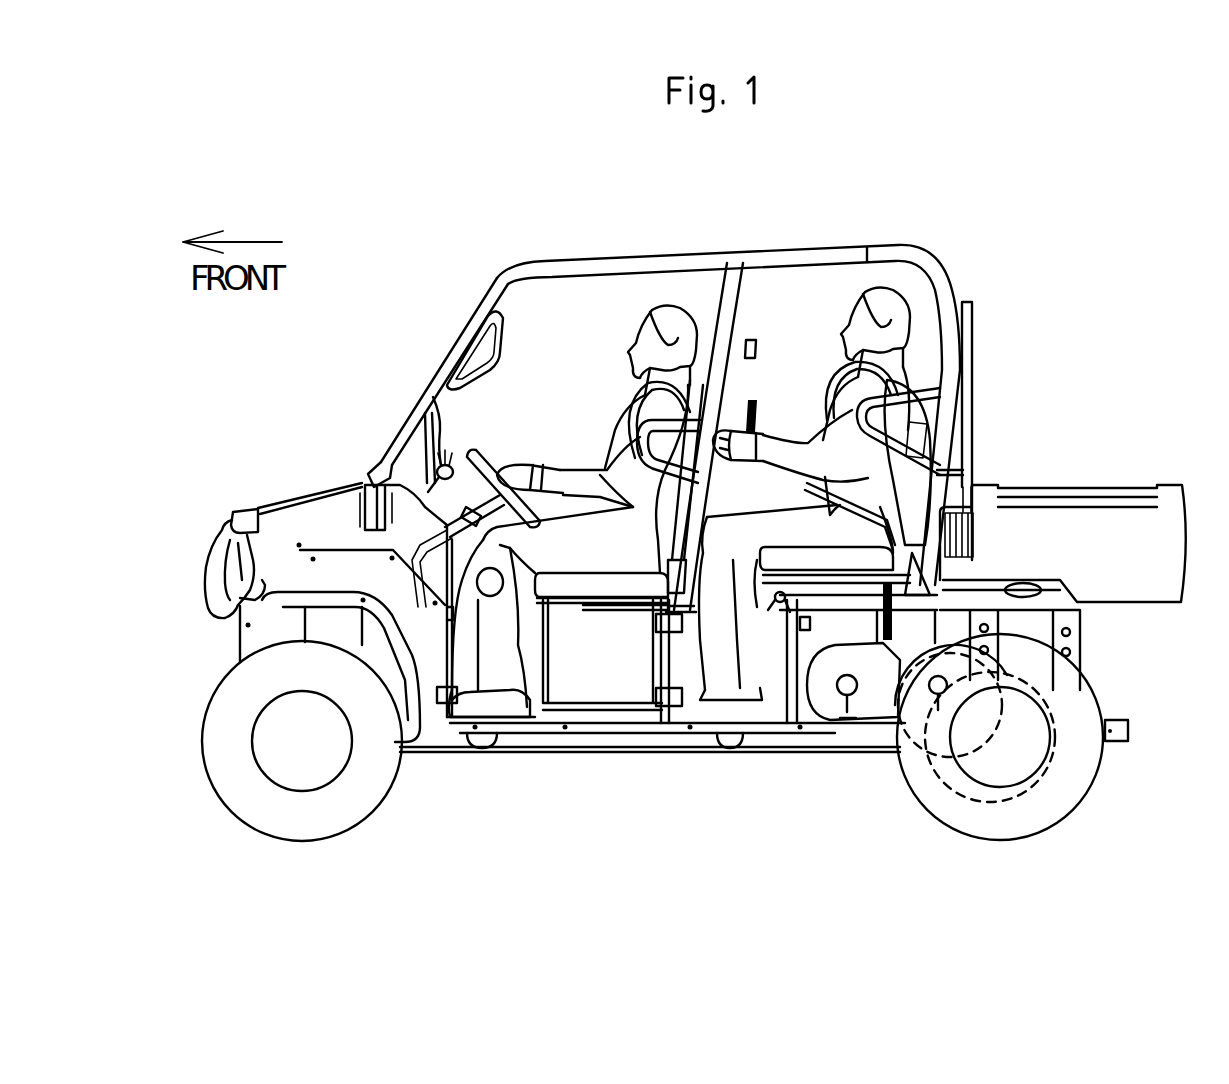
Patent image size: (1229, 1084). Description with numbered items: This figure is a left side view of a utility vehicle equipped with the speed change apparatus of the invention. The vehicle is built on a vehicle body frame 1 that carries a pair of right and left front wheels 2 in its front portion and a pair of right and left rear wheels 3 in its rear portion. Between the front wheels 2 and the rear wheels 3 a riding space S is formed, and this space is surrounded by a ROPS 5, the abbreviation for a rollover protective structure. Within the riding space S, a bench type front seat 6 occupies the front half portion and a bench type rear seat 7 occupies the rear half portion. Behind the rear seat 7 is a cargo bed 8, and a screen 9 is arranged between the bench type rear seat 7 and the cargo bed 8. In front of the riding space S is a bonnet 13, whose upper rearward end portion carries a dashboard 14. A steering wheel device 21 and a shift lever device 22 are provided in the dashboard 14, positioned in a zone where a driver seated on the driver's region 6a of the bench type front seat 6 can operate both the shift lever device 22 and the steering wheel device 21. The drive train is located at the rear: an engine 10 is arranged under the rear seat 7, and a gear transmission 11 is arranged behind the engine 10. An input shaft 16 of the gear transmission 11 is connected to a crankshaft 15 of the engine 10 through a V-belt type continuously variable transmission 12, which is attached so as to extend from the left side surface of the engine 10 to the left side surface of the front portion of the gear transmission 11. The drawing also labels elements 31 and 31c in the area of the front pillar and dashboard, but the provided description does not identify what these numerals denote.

The vehicle body frame 1 is at (651, 750).
The front wheels 2 is at (368, 780).
The rear wheels 3 is at (1060, 785).
The ROPS 5 is at (553, 263).
The bench type front seat 6 is at (572, 600).
The driver's region 6a is at (621, 611).
The bench type rear seat 7 is at (745, 578).
The cargo bed 8 is at (1090, 465).
The screen 9 is at (966, 378).
The engine 10 is at (815, 715).
The gear transmission 11 is at (953, 740).
The V-belt type continuously variable transmission 12 is at (870, 695).
The bonnet 13 is at (305, 535).
The dashboard 14 is at (418, 477).
The crankshaft 15 is at (848, 720).
The input shaft 16 is at (920, 730).
The steering wheel device 21 is at (491, 458).
The shift lever device 22 is at (449, 463).
The front pillar 31 is at (428, 401).
The pillar lower member 31c is at (433, 397).
The riding space S is at (570, 358).